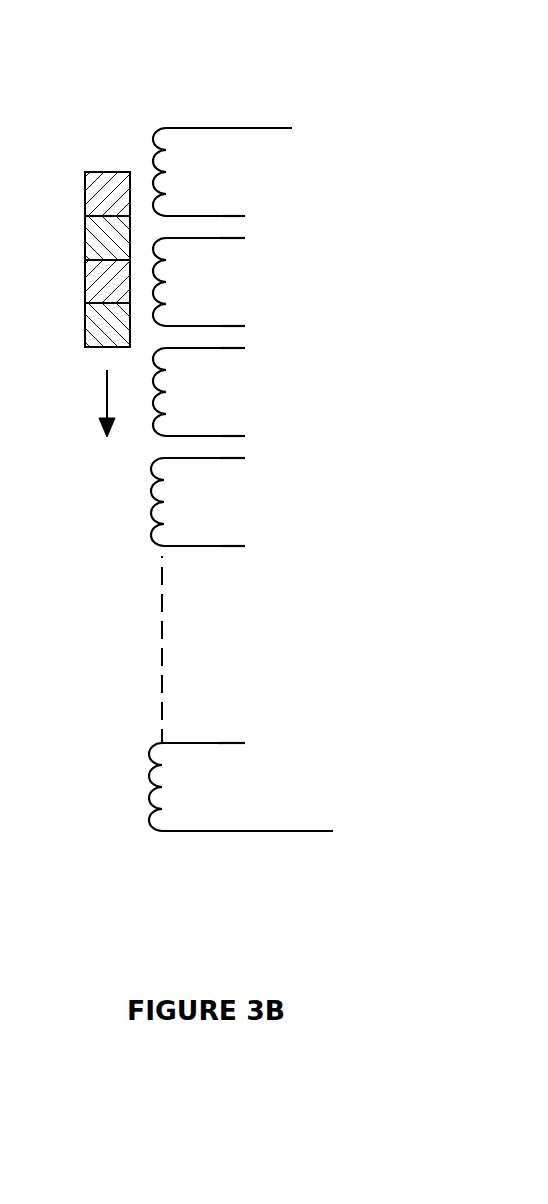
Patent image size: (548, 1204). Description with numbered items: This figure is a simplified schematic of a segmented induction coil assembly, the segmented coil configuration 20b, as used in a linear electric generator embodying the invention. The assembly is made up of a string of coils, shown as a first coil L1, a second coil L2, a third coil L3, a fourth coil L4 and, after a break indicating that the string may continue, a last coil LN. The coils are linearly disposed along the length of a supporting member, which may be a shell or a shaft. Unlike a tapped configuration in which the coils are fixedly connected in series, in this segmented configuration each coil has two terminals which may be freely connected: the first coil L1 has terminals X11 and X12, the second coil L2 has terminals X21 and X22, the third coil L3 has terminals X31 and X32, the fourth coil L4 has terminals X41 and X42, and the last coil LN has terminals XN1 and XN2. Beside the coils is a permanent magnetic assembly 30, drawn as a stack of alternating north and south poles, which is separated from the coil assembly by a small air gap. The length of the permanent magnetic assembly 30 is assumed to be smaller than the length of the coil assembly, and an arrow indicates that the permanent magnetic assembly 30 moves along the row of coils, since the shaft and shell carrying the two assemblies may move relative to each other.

The segmented coil configuration 20b is at (143, 108).
The permanent magnetic assembly 30 is at (110, 172).
The first coil L1 is at (229, 172).
The second coil L2 is at (229, 282).
The third coil L3 is at (229, 392).
The fourth coil L4 is at (228, 502).
The last coil LN is at (241, 787).
The first terminal of the first coil X11 is at (220, 128).
The second terminal of the first coil X12 is at (222, 216).
The first terminal of the second coil X21 is at (220, 238).
The second terminal of the second coil X22 is at (222, 326).
The first terminal of the third coil X31 is at (220, 348).
The second terminal of the third coil X32 is at (222, 436).
The first terminal of the fourth coil X41 is at (220, 458).
The second terminal of the fourth coil X42 is at (222, 546).
The first terminal of the last coil XN1 is at (218, 743).
The second terminal of the last coil XN2 is at (222, 831).